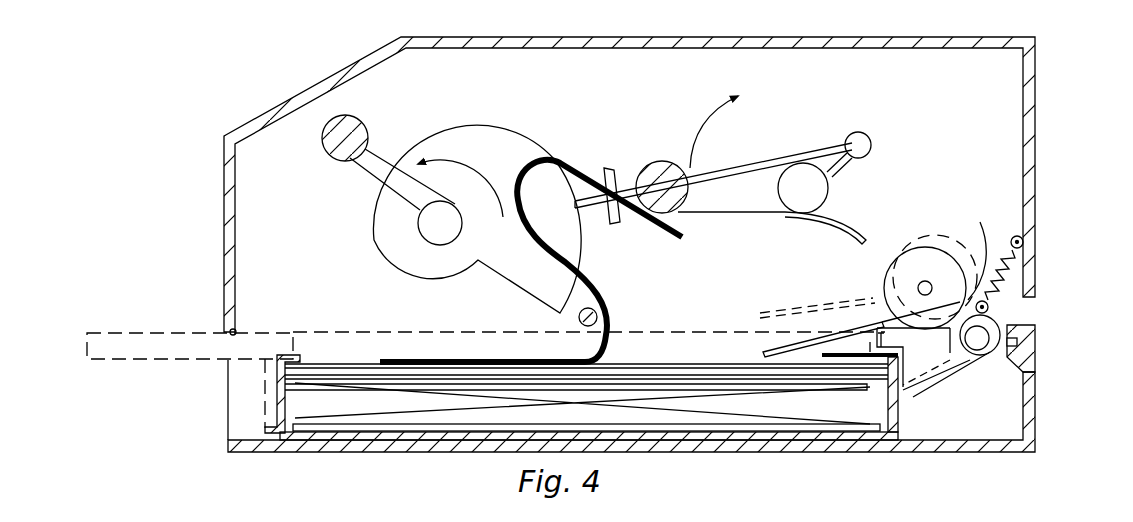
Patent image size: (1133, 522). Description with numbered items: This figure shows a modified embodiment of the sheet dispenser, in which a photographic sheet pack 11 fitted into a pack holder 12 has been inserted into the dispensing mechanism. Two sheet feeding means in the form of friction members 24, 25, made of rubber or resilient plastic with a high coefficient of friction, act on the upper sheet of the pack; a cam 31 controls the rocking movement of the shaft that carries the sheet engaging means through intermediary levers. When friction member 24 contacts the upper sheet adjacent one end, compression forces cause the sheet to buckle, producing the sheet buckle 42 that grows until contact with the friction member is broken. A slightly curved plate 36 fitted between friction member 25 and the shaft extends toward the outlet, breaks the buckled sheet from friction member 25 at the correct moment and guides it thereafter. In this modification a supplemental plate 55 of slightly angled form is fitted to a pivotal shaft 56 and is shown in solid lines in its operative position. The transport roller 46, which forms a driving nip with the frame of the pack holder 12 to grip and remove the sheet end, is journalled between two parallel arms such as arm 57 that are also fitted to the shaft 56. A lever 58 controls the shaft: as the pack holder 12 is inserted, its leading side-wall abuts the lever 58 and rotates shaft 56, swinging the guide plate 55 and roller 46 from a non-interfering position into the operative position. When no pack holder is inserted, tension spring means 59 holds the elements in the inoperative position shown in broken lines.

The photographic sheet pack 11 is at (280, 400).
The pack holder 12 is at (158, 347).
The friction member 24 is at (362, 124).
The friction member 25 is at (653, 162).
The cam 31 is at (472, 137).
The slightly curved plate 36 is at (827, 222).
The sheet buckle 42 is at (560, 160).
The transport roller 46 is at (917, 262).
The supplemental plate 55 is at (787, 343).
The pivotal shaft 56 is at (1013, 343).
The arm 57 is at (981, 252).
The lever 58 is at (937, 386).
The tension spring means 59 is at (1010, 277).